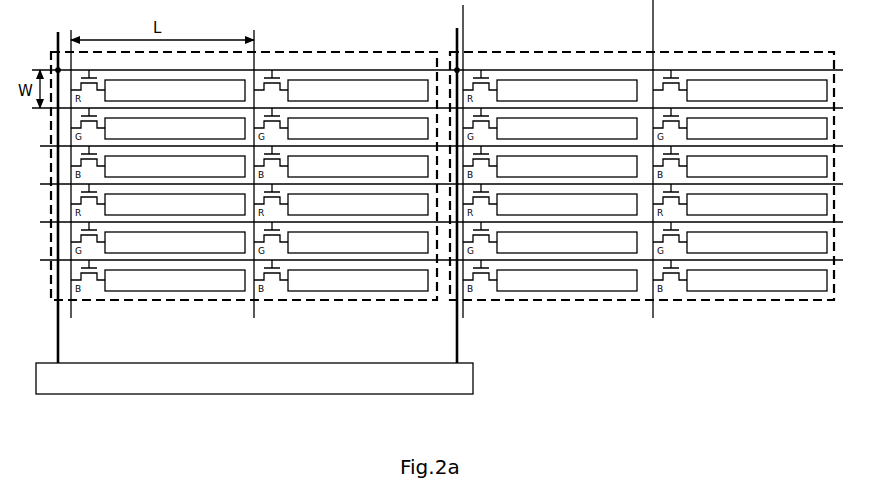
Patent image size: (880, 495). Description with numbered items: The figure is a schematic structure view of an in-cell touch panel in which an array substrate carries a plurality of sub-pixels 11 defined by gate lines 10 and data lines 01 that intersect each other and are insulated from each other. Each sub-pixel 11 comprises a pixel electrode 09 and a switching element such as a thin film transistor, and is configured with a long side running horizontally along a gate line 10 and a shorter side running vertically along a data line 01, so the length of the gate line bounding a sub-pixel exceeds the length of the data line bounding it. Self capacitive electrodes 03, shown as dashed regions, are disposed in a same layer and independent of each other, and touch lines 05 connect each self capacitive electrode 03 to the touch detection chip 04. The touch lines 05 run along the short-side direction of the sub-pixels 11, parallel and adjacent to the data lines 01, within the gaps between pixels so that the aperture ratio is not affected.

The data line 01 is at (654, 60).
The self capacitive electrode 03 is at (520, 50).
The touch detection chip 04 is at (474, 382).
The touch line 05 is at (458, 344).
The pixel electrode 09 is at (707, 91).
The gate line 10 is at (790, 70).
The sub-pixel 11 is at (369, 74).